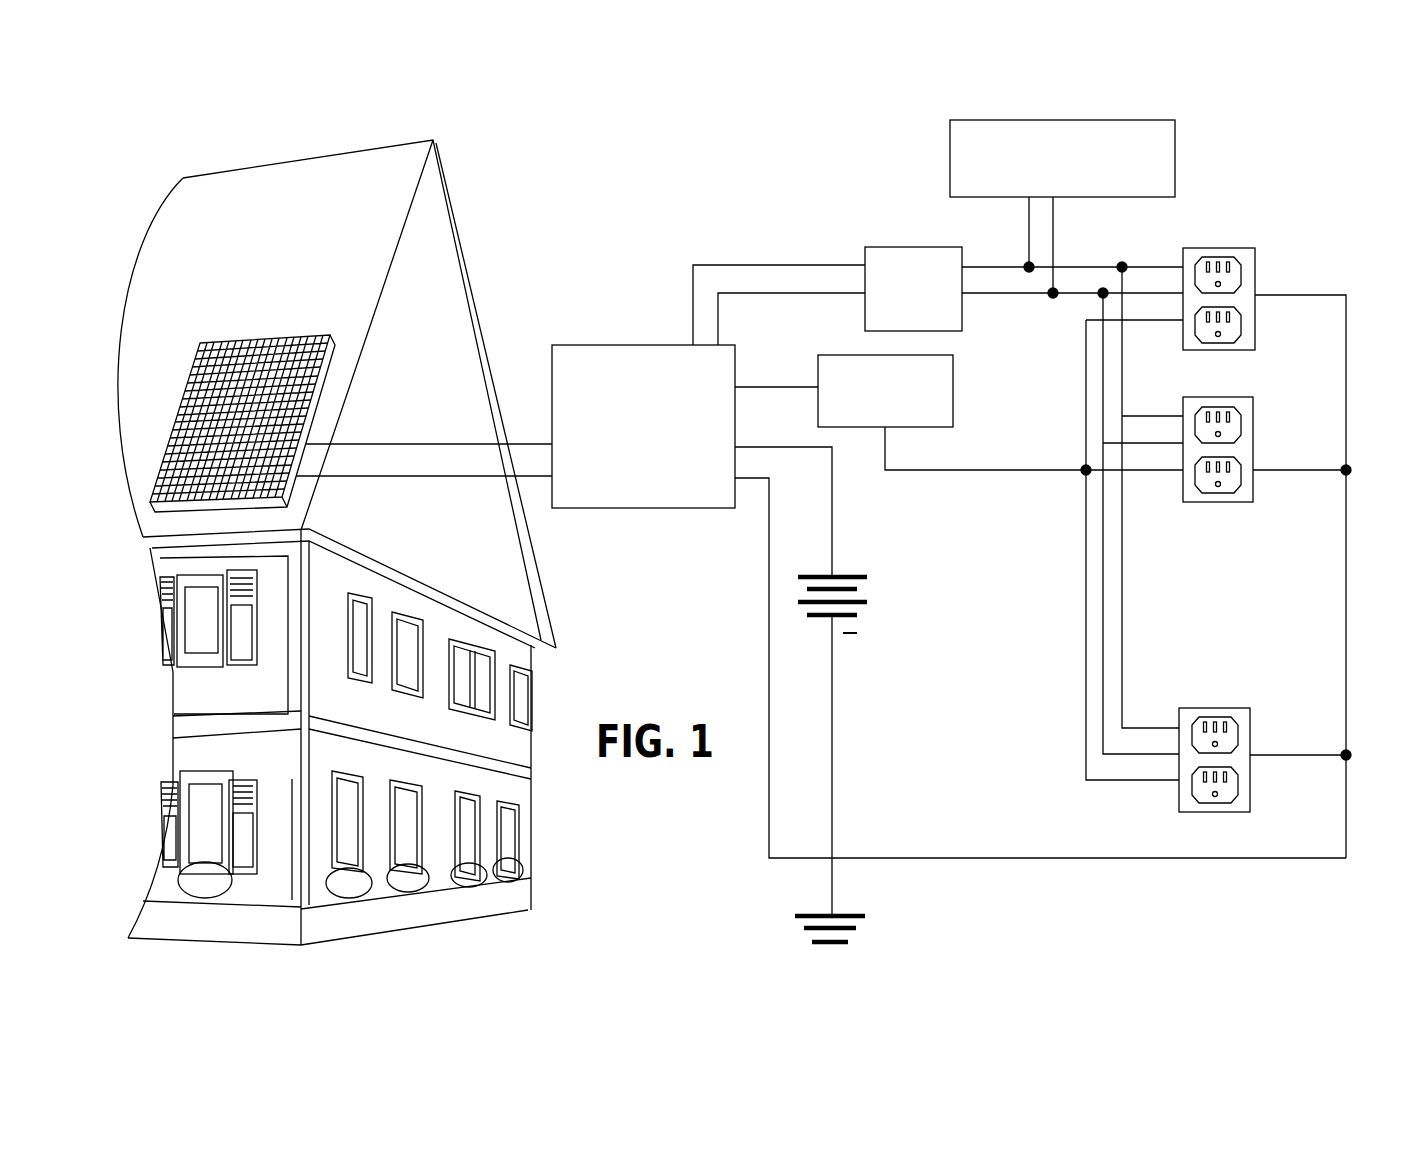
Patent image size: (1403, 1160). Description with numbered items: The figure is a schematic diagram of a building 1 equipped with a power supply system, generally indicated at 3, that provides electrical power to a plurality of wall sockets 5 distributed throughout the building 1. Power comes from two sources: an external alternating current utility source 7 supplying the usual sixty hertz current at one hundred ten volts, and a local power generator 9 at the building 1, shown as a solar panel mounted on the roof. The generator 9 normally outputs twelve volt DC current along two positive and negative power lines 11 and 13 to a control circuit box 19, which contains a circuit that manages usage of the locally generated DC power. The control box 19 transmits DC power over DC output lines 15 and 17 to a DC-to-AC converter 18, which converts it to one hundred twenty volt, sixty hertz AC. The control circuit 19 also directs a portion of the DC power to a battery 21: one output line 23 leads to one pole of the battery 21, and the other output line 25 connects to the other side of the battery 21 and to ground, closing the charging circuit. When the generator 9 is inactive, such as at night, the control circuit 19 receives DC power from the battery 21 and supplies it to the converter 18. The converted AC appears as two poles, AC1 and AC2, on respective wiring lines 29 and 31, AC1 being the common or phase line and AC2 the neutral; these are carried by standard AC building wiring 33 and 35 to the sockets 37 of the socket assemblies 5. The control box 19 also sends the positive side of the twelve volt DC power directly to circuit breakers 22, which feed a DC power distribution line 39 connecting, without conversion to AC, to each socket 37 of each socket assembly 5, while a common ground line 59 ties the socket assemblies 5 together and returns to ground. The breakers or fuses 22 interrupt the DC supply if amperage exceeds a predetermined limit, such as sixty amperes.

The building 1 is at (268, 200).
The power supply system 3 is at (736, 206).
The wall socket 5 is at (1255, 258).
The external AC power source 7 is at (949, 159).
The local power generator 9 is at (321, 393).
The power line 11 is at (523, 478).
The power line 13 is at (520, 442).
The DC output line 15 is at (693, 290).
The DC output line 17 is at (740, 293).
The DC-to-AC converter 18 is at (903, 247).
The control circuit box 19 is at (658, 512).
The battery 21 is at (863, 588).
The circuit breakers 22 is at (838, 355).
The control circuit output line 23 is at (802, 448).
The output line 25 is at (769, 548).
The wiring line 29 is at (1007, 268).
The wiring line 31 is at (983, 295).
The AC building wiring 33 is at (1122, 553).
The AC building wiring 35 is at (1103, 607).
The socket 37 is at (1208, 258).
The DC power distribution line 39 is at (1086, 405).
The ground line 59 is at (1347, 585).